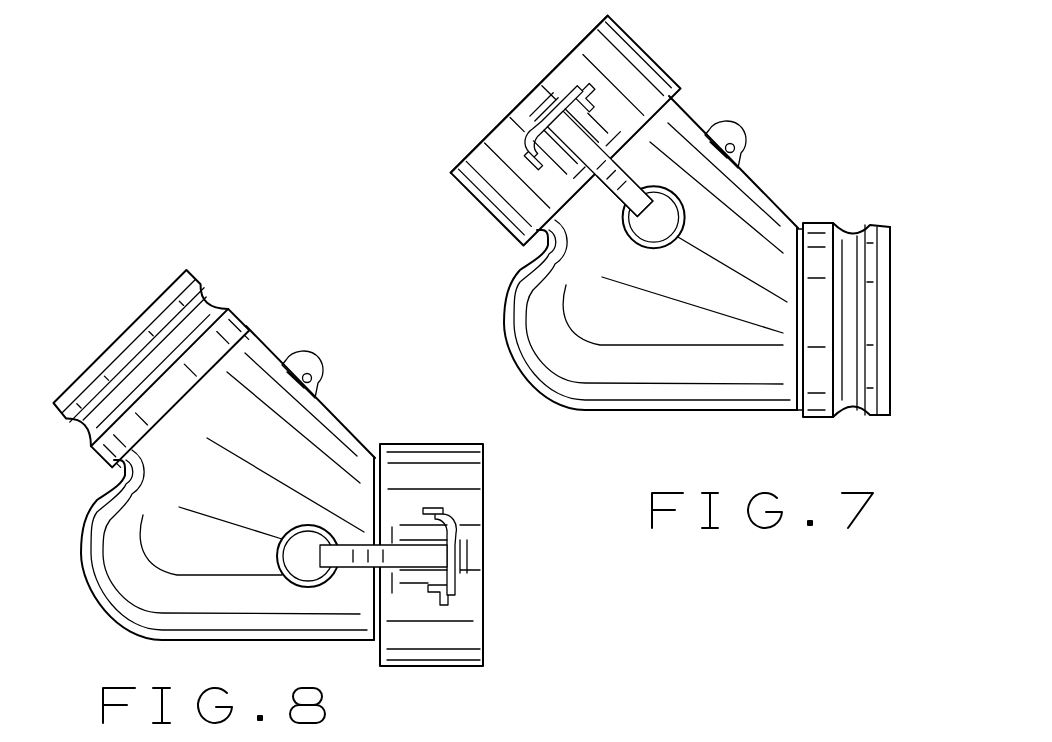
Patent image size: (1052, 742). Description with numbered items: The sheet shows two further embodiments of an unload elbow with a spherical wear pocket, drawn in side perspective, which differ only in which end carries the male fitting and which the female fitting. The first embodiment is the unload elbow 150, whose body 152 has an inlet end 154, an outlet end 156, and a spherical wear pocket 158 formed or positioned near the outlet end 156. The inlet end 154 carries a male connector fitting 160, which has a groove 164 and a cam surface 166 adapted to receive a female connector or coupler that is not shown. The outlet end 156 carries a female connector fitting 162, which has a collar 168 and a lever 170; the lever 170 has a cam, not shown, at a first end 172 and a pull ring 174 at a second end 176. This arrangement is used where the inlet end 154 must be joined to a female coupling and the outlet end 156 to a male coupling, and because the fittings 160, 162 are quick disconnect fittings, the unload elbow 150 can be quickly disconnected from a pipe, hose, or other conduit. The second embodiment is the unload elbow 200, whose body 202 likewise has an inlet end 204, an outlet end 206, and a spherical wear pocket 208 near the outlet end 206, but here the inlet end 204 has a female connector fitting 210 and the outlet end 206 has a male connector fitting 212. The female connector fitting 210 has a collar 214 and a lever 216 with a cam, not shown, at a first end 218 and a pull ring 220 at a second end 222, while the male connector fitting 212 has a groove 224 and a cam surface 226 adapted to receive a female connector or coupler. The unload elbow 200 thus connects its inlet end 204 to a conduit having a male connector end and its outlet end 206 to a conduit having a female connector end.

In FIG. 7, the unload elbow with spherical wear pocket 150 is at (673, 212).
In FIG. 7, the body 152 is at (635, 253).
In FIG. 7, the inlet end 154 is at (902, 312).
In FIG. 7, the outlet end 156 is at (566, 151).
In FIG. 7, the spherical wear pocket 158 is at (502, 337).
In FIG. 7, the male connector fitting 160 is at (877, 273).
In FIG. 7, the female connector fitting 162 is at (461, 200).
In FIG. 7, the groove 164 is at (857, 228).
In FIG. 7, the cam surface 166 is at (810, 225).
In FIG. 7, the collar 168 is at (630, 50).
In FIG. 7, the lever 170 is at (598, 175).
In FIG. 7, the first end 172 is at (537, 100).
In FIG. 7, the pull ring 174 is at (647, 248).
In FIG. 7, the second end 176 is at (637, 198).
In FIG. 8, the unload elbow with spherical wear pocket 200 is at (207, 446).
In FIG. 8, the body 202 is at (325, 392).
In FIG. 8, the inlet end 204 is at (387, 518).
In FIG. 8, the outlet end 206 is at (159, 327).
In FIG. 8, the spherical wear pocket 208 is at (87, 593).
In FIG. 8, the female connector fitting 210 is at (404, 432).
In FIG. 8, the male connector fitting 212 is at (160, 280).
In FIG. 8, the collar 214 is at (468, 476).
In FIG. 8, the lever 216 is at (412, 553).
In FIG. 8, the first end 218 is at (458, 556).
In FIG. 8, the pull ring 220 is at (277, 558).
In FIG. 8, the second end 222 is at (290, 532).
In FIG. 8, the groove 224 is at (210, 297).
In FIG. 8, the cam surface 226 is at (103, 473).